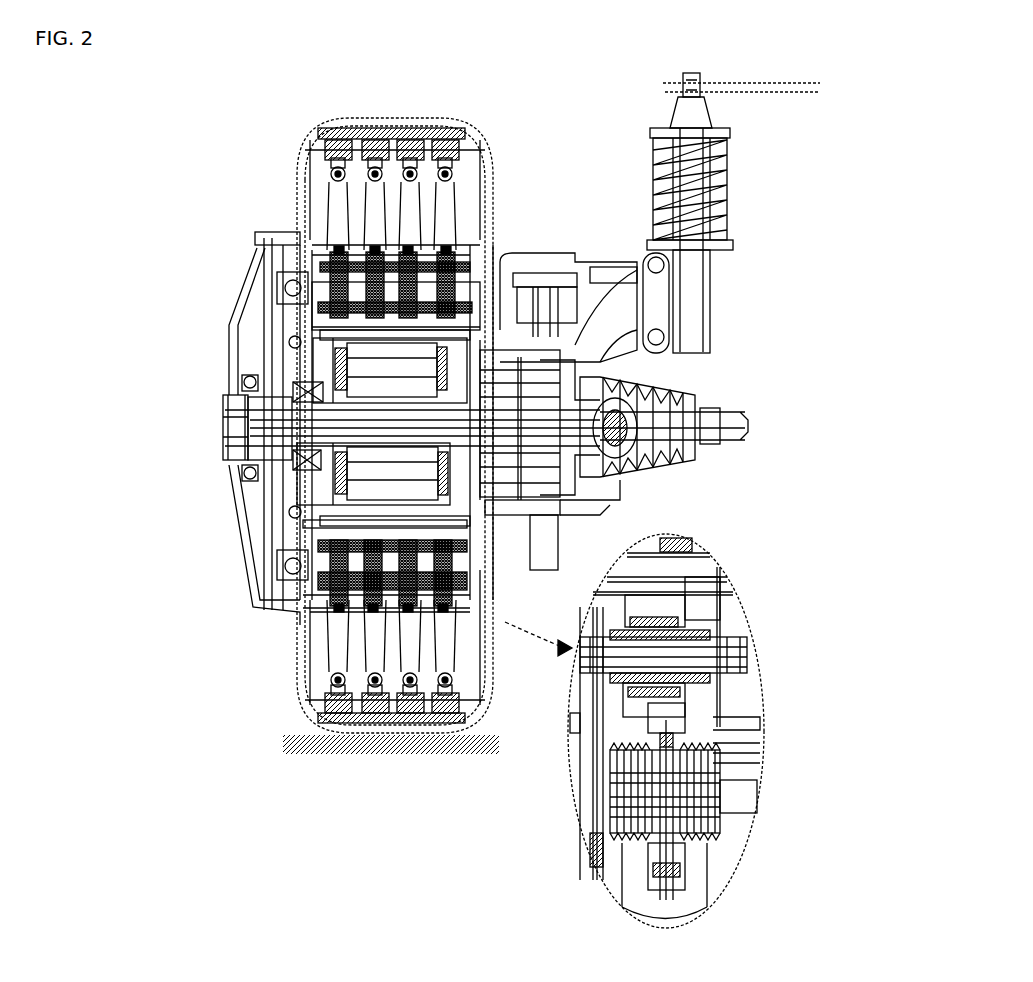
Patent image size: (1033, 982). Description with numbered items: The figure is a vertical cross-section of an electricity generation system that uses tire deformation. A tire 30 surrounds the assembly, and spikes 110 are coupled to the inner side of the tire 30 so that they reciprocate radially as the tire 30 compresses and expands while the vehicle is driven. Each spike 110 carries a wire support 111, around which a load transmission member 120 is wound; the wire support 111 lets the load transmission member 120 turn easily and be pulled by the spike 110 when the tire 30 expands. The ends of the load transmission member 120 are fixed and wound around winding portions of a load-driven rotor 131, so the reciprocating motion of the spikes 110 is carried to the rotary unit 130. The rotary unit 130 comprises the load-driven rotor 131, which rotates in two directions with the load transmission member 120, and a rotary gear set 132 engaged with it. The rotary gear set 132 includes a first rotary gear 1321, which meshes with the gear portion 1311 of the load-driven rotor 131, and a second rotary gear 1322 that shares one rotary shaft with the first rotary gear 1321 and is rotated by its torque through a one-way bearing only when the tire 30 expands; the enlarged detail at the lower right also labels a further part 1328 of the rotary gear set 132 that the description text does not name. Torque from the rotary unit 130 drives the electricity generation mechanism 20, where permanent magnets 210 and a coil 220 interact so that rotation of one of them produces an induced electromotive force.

The tire 30 is at (400, 123).
The spike 110 is at (320, 135).
The wire support 111 is at (325, 160).
The load transmission member 120 is at (330, 190).
The rotary unit 130 is at (152, 237).
The load-driven rotor 131 is at (320, 262).
The rotary gear set 132 is at (290, 308).
The electricity generation mechanism 20 is at (165, 335).
The permanent magnets 210 is at (275, 345).
The coil 220 is at (262, 368).
The first rotary gear 1321 is at (665, 600).
The seal 1328 is at (676, 590).
The second rotary gear 1322 is at (725, 590).
The gear portion 1311 is at (665, 715).